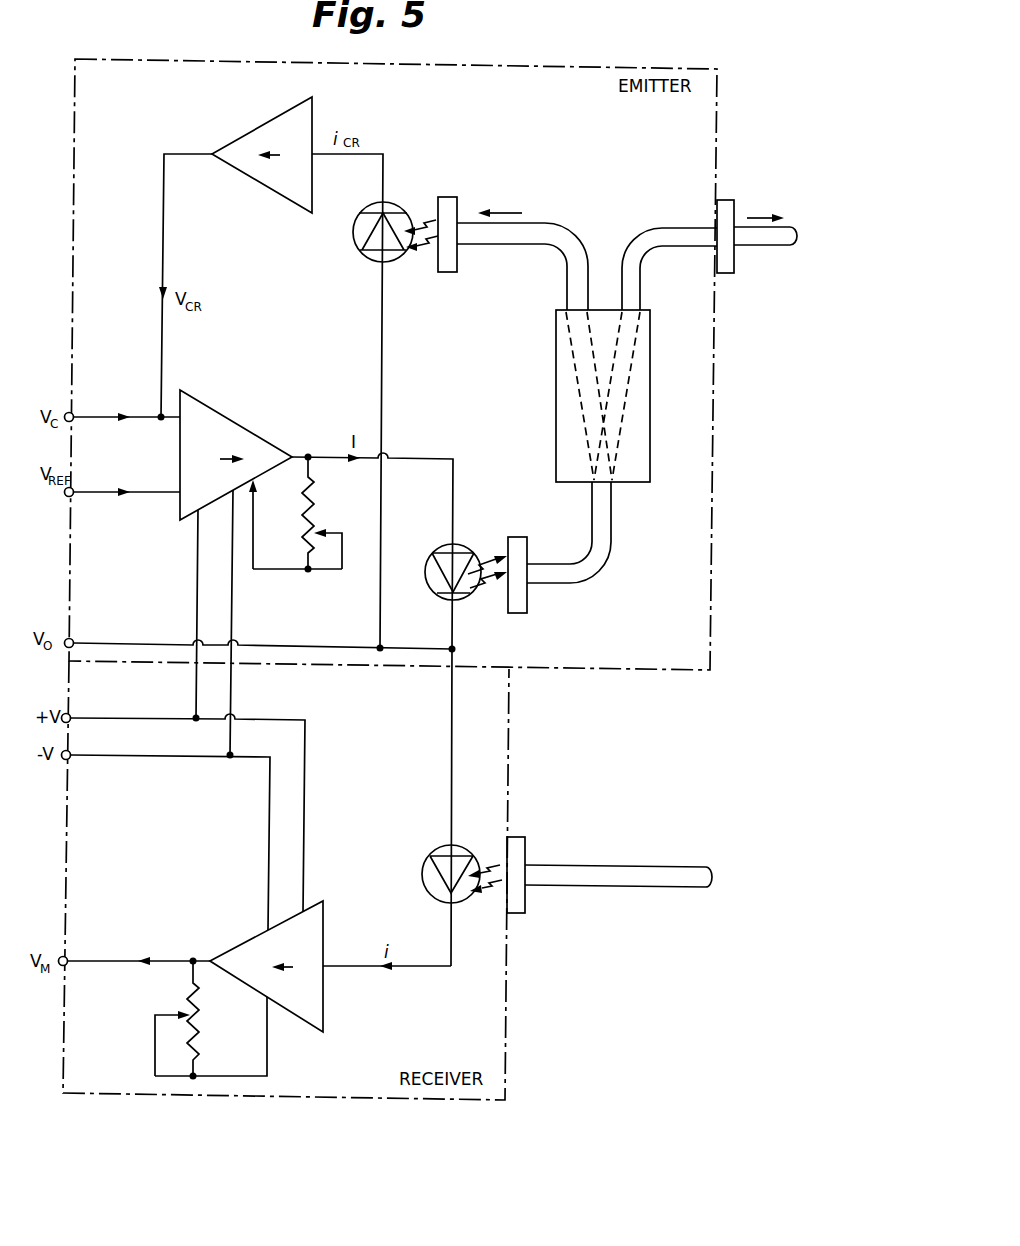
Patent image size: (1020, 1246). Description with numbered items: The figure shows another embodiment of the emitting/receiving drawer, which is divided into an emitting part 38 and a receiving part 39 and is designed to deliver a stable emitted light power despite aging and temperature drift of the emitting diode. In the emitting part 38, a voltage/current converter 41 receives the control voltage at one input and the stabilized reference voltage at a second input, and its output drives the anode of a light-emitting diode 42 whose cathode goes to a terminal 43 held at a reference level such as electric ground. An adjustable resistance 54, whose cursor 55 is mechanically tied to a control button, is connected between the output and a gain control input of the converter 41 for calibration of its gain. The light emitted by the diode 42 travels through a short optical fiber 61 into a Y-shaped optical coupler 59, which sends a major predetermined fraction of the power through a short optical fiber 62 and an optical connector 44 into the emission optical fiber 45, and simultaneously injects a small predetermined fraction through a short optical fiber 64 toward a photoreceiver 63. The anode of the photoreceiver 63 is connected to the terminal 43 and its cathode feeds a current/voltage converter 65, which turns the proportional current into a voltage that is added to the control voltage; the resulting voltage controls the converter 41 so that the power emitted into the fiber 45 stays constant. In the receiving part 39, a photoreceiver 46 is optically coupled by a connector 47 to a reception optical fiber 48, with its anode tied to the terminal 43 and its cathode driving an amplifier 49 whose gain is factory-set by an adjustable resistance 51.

The emitting component 38 is at (712, 450).
The receiving component 39 is at (505, 1027).
The voltage/current converter 41 is at (228, 417).
The light-emitting diode 42 is at (465, 597).
The terminal 43 is at (71, 639).
The optical connector 44 is at (724, 273).
The emission optical fiber 45 is at (765, 241).
The photoreceiver 46 is at (425, 864).
The connector 47 is at (525, 895).
The reception optical fiber 48 is at (618, 865).
The amplifier 49 is at (255, 939).
The adjustable resistance 51 is at (198, 1016).
The adjustable resistance 54 is at (302, 507).
The cursor 55 is at (332, 528).
The Y-shaped optical coupler 59 is at (556, 378).
The short optical fiber 61 is at (597, 560).
The short optical fiber 62 is at (666, 227).
The photoreceiver 63 is at (353, 242).
The short optical fiber 64 is at (535, 223).
The current/voltage converter 65 is at (266, 124).